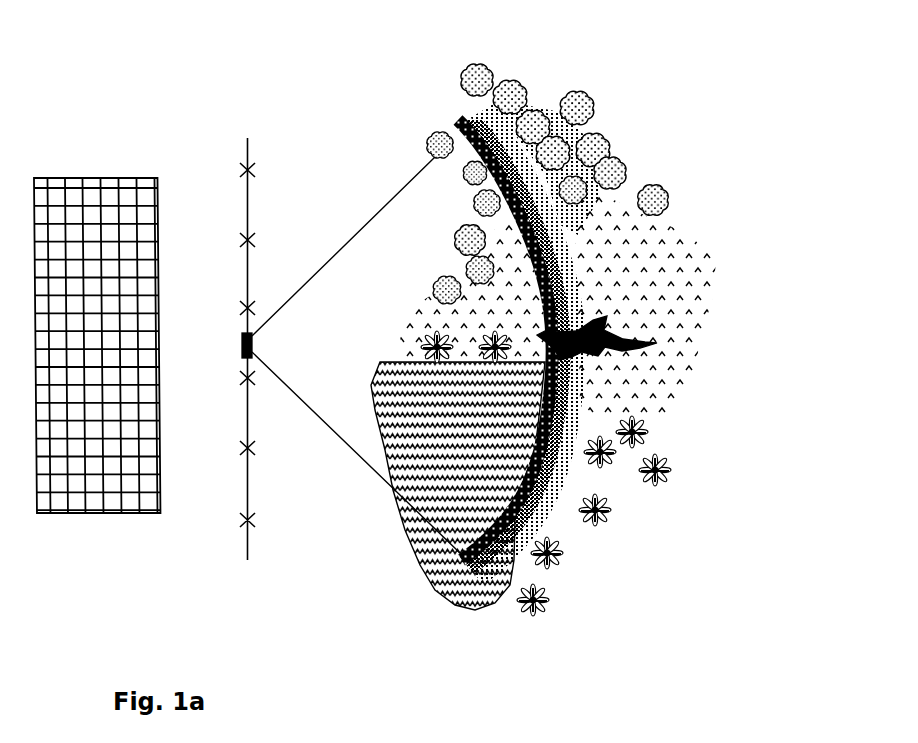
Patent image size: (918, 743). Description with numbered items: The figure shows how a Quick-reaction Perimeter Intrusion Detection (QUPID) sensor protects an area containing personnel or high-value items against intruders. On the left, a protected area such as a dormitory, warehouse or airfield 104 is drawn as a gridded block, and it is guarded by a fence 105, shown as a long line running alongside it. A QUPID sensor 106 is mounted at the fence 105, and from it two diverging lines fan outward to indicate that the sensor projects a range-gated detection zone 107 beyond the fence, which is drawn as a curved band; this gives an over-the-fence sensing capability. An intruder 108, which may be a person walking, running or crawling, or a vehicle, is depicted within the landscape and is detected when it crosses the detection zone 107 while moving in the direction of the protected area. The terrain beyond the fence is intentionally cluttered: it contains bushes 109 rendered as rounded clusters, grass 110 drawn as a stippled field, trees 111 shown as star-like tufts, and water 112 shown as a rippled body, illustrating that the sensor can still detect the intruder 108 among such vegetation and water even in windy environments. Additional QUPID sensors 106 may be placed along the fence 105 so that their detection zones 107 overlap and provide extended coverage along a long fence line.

The airfield 104 is at (84, 163).
The fence 105 is at (240, 138).
The QUPID sensor 106 is at (356, 349).
The range-gated detection zone 107 is at (445, 118).
The intruder 108 is at (640, 336).
The bushes 109 is at (612, 138).
The grass 110 is at (655, 258).
The trees 111 is at (655, 452).
The water 112 is at (405, 543).